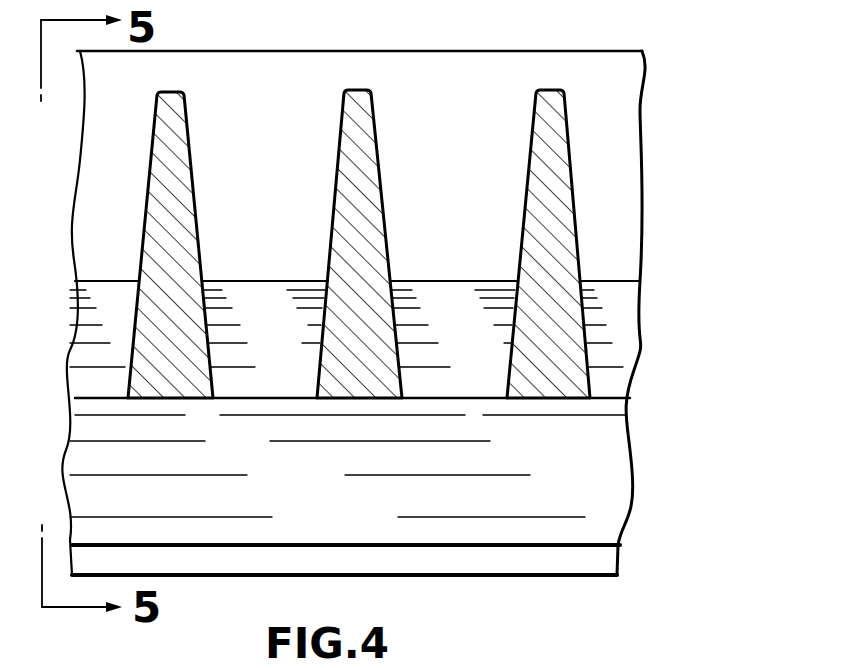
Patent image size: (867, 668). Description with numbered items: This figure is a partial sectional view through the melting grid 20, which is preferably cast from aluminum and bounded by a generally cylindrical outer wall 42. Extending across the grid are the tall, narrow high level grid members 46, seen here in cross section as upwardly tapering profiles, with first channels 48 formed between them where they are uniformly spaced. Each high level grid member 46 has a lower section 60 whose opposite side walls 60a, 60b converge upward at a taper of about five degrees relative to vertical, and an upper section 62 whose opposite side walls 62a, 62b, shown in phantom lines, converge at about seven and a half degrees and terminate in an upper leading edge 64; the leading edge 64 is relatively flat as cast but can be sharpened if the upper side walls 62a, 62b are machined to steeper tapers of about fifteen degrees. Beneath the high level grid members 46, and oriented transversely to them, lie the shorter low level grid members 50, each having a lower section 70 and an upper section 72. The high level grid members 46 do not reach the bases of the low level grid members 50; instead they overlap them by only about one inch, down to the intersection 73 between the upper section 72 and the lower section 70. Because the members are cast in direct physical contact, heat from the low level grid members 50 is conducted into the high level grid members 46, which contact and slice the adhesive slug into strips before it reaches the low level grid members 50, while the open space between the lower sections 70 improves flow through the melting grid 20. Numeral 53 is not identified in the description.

The melting grid 20 is at (690, 262).
The outer wall 42 is at (625, 88).
The high level grid members 46 is at (136, 238).
The first channels 48 is at (262, 130).
The low level grid members 50 is at (616, 423).
The contact regions 53 is at (265, 400).
The lower section 60 is at (365, 370).
The side wall 60a is at (318, 362).
The side wall 60b is at (400, 358).
The upper section 62 is at (360, 172).
The side wall 62a is at (412, 125).
The side wall 62b is at (440, 126).
The upper leading edge 64 is at (356, 98).
The lower section 70 is at (618, 490).
The upper section 72 is at (624, 330).
The intersection 73 is at (402, 400).